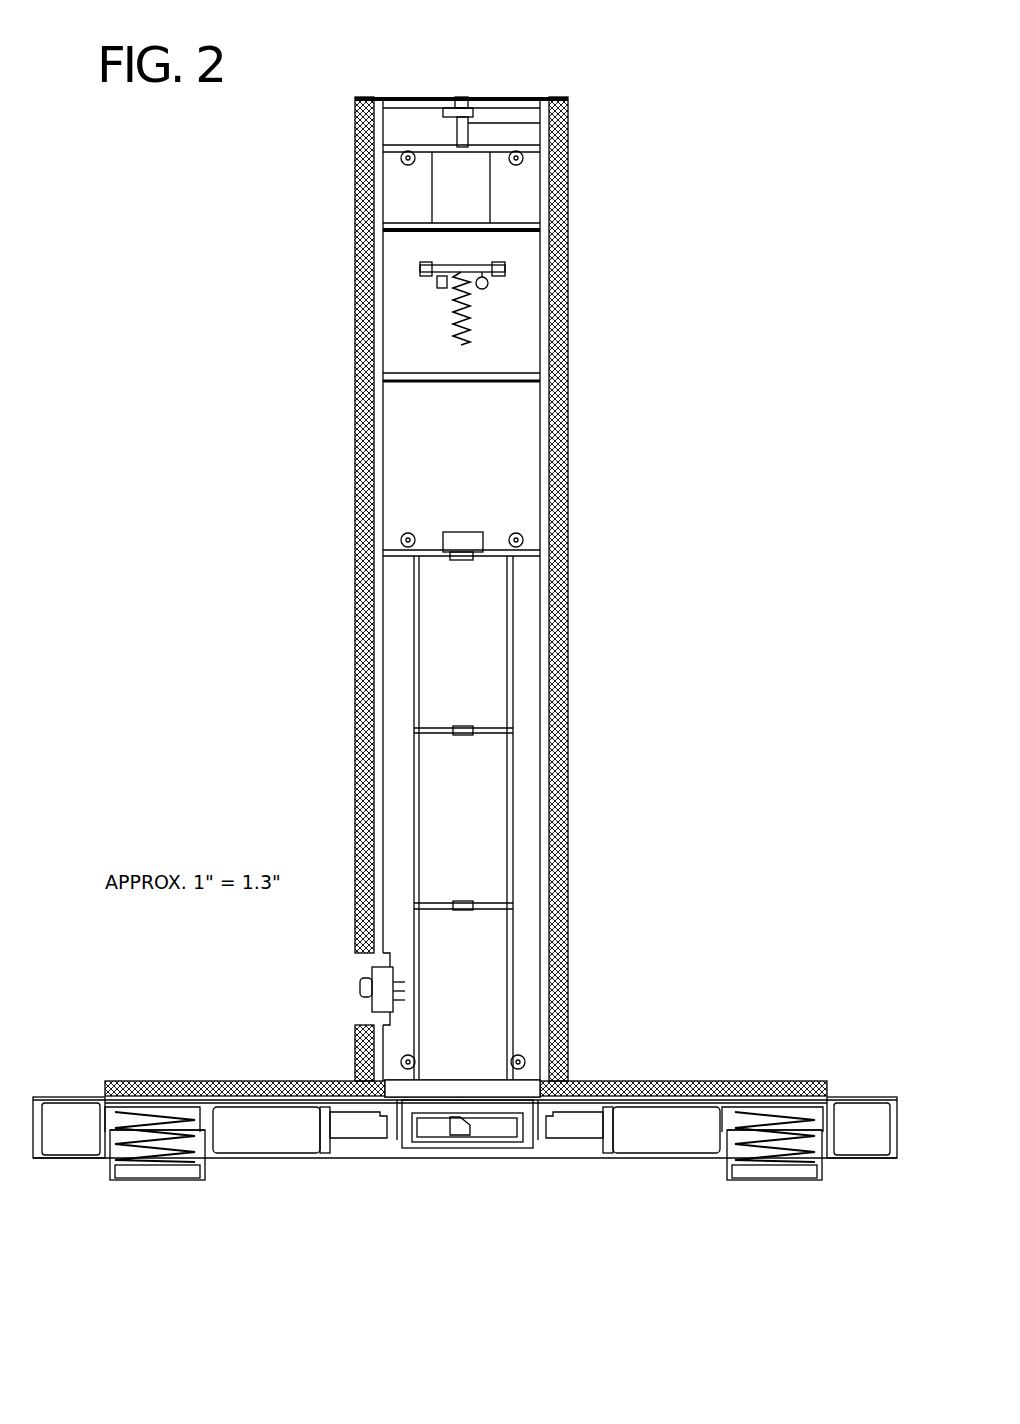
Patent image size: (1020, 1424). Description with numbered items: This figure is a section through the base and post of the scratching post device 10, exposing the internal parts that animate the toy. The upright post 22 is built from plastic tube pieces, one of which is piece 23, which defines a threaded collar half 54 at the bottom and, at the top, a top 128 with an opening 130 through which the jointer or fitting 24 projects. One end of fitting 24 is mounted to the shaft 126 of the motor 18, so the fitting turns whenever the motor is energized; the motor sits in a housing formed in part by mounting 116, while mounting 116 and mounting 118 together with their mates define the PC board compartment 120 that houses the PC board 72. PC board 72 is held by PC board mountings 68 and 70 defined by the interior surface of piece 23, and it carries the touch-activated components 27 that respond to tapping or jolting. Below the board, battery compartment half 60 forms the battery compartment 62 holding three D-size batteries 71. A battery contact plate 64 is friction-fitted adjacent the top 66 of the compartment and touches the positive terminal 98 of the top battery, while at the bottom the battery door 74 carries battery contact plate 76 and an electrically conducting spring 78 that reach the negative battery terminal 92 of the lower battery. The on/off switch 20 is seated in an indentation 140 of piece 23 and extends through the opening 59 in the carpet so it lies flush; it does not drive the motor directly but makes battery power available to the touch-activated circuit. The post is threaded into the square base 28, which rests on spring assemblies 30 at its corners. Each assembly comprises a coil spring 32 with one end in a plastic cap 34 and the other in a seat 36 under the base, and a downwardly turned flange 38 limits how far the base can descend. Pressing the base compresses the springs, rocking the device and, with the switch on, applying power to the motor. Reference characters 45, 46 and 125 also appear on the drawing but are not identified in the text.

The scratching post device 10 is at (692, 424).
The motor 18 is at (492, 210).
The on/off switch 20 is at (366, 976).
The post 22 is at (556, 412).
The piece of plastic tube 23 is at (405, 102).
The jointer or fitting 24 is at (478, 122).
The touch-activated components 27 is at (456, 338).
The base 28 is at (100, 990).
The spring assemblies 30 is at (212, 1163).
The coil spring 32 is at (808, 1120).
The plastic cap 34 is at (826, 1172).
The seat 36 is at (112, 1118).
The downwardly turned flange 38 is at (48, 1150).
The base plate 45 is at (92, 1100).
The screw 46 is at (400, 158).
The threaded collar half 54 is at (430, 1085).
The opening in carpet 59 is at (368, 1022).
The battery compartment half 60 is at (412, 653).
The battery compartment 62 is at (521, 654).
The battery contact plate 64 is at (455, 532).
The top of compartment 66 is at (496, 538).
The PC board mounting 68 is at (420, 276).
The PC board mounting 70 is at (502, 275).
The batteries 71 is at (500, 620).
The PC board 72 is at (486, 264).
The battery door 74 is at (442, 1105).
The battery contact plate 76 is at (521, 1100).
The electrically conducting spring 78 is at (440, 1083).
The negative battery terminal 92 is at (487, 1100).
The positive terminal 98 is at (457, 560).
The mounting 116 is at (525, 233).
The mounting 118 is at (520, 376).
The PC board compartment 120 is at (518, 340).
The motor housing 125 is at (408, 203).
The shaft 126 is at (455, 138).
The top 128 is at (428, 100).
The opening 130 is at (462, 100).
The indentation 140 is at (372, 967).